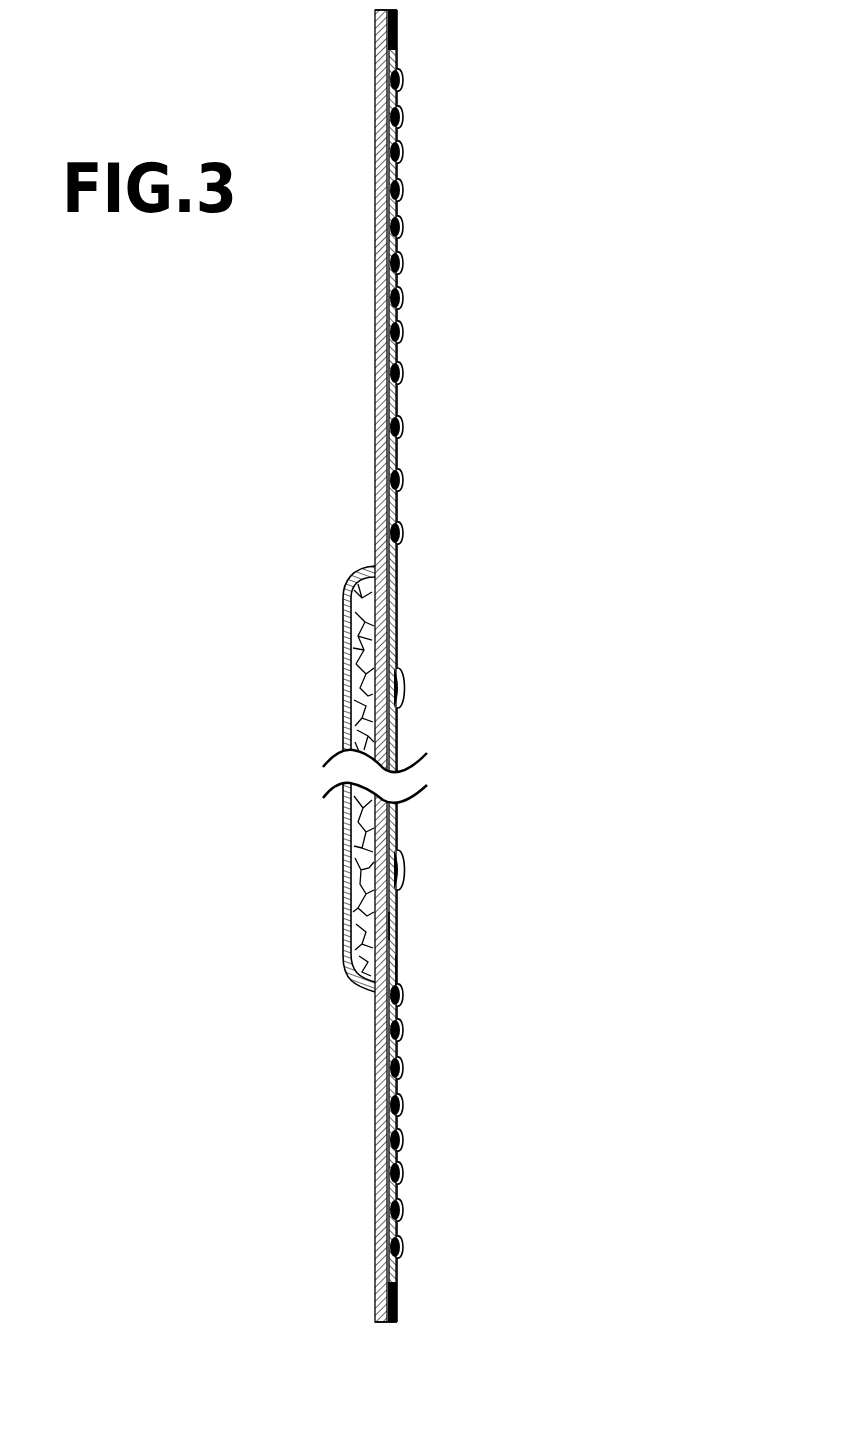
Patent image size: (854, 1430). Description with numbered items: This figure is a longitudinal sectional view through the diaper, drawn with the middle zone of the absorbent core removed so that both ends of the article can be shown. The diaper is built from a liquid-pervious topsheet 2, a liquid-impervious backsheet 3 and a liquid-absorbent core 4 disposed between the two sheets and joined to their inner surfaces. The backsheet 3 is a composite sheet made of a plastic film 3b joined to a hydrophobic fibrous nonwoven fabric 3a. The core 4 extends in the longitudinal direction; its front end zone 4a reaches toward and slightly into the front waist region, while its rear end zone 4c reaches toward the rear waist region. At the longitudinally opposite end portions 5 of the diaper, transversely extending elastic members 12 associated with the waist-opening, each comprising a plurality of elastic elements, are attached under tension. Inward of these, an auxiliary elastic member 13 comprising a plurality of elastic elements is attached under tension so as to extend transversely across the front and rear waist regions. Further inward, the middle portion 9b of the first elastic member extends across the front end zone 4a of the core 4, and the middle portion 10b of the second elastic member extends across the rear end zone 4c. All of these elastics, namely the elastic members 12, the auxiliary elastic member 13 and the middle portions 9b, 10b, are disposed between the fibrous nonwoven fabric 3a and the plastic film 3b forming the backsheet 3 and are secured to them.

The liquid-pervious topsheet 2 is at (343, 659).
The liquid-impervious backsheet 3 is at (398, 600).
The hydrophobic fibrous nonwoven fabric 3a is at (396, 927).
The plastic film 3b is at (397, 967).
The liquid-absorbent core 4 is at (362, 722).
The front end zone 4a is at (356, 940).
The rear end zone 4c is at (356, 582).
The longitudinally opposite end portions 5 is at (378, 42).
The middle portion of the first elastic member 9b is at (406, 870).
The middle portion of the second elastic member 10b is at (406, 686).
The elastic members associated with a waist-opening 12 is at (404, 27).
The auxiliary elastic member 13 is at (405, 152).